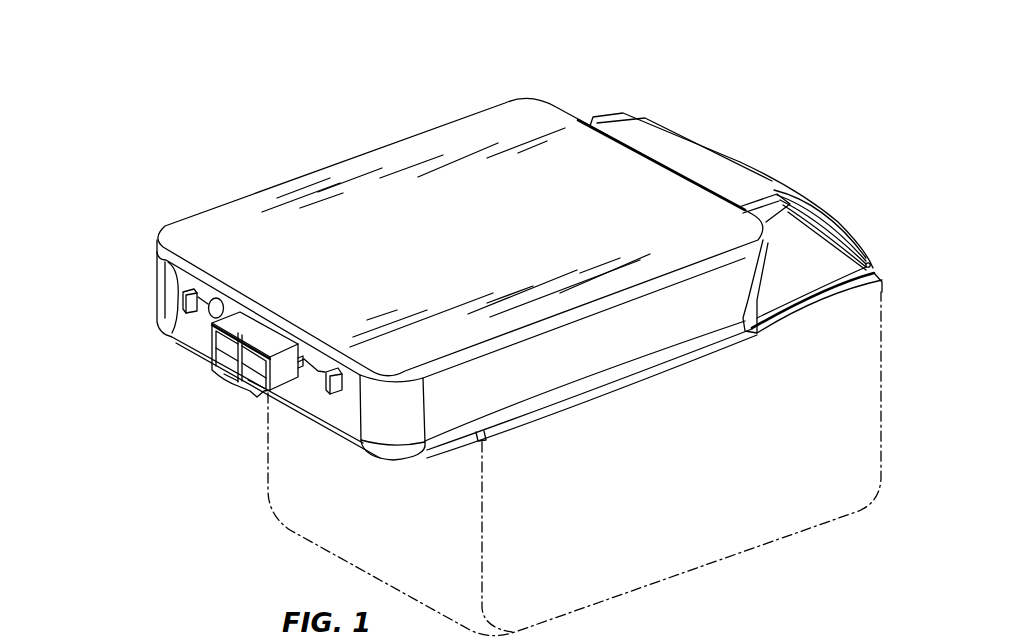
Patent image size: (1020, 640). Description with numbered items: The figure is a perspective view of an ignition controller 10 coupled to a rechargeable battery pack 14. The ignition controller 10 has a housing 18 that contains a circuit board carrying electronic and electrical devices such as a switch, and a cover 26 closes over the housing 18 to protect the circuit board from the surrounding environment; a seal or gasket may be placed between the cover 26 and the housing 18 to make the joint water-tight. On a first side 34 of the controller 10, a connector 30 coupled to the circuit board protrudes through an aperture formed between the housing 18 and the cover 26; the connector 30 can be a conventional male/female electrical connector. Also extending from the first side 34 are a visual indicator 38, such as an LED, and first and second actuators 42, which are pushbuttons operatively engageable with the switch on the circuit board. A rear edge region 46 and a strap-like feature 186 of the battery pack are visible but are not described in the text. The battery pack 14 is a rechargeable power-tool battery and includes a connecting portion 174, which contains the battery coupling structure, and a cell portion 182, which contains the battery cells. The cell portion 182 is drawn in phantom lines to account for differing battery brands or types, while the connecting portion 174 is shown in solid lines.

The ignition controller 10 is at (338, 144).
The battery pack 14 is at (919, 260).
The housing 18 is at (164, 276).
The cover 26 is at (487, 124).
The connector 30 is at (250, 390).
The first side 34 is at (138, 298).
The visual indicator 38 is at (216, 317).
The actuators 42 is at (196, 311).
The rear edge 46 is at (561, 101).
The connecting portion 174 is at (717, 117).
The cell portion 182 is at (882, 391).
The strap 186 is at (744, 180).